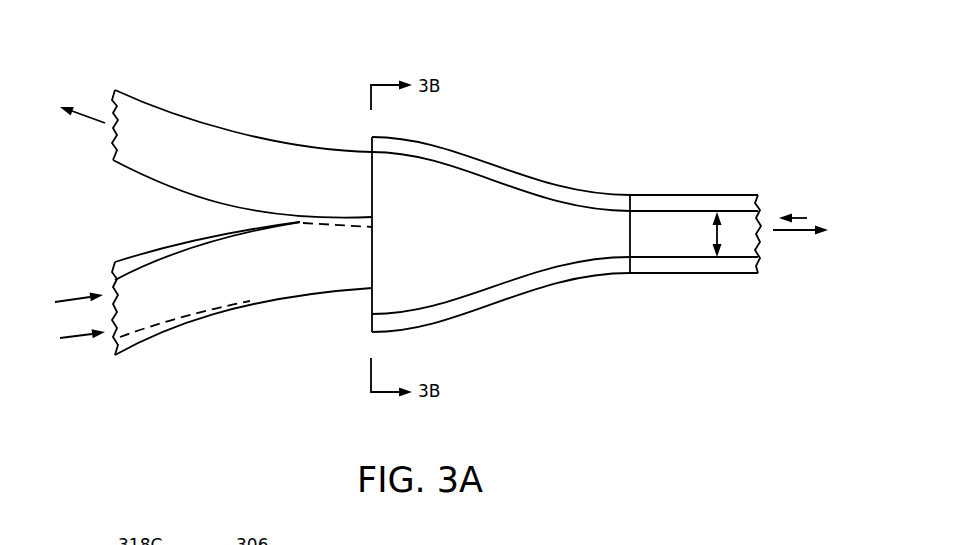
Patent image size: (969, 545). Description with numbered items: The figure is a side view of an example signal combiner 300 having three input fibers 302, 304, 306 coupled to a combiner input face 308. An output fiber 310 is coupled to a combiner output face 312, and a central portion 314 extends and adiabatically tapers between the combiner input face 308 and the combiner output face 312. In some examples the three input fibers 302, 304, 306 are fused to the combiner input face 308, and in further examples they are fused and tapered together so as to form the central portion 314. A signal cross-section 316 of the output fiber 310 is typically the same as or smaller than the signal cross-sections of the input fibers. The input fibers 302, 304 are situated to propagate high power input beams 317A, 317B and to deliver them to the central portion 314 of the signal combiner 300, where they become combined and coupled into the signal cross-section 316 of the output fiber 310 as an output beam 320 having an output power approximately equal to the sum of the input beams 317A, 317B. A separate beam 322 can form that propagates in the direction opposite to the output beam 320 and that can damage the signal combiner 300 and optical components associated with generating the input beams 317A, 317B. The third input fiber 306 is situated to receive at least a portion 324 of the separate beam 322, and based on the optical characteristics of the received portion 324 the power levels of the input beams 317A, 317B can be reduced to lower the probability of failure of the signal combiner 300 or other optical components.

The signal combiner 300 is at (699, 66).
The input fiber 302 is at (137, 262).
The input fiber 304 is at (268, 283).
The input fiber 306 is at (145, 122).
The combiner input face 308 is at (370, 175).
The output fiber 310 is at (733, 217).
The combiner output face 312 is at (630, 233).
The central portion 314 is at (495, 215).
The signal cross-section 316 is at (720, 233).
The input beam 317A is at (72, 294).
The input beam 317B is at (77, 338).
The output beam 320 is at (787, 232).
The separate beam 322 is at (805, 217).
The portion 324 is at (88, 115).